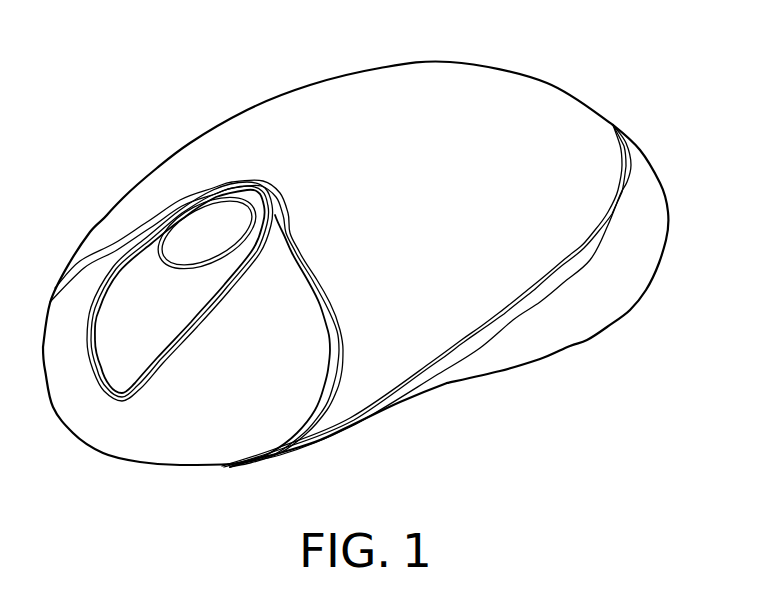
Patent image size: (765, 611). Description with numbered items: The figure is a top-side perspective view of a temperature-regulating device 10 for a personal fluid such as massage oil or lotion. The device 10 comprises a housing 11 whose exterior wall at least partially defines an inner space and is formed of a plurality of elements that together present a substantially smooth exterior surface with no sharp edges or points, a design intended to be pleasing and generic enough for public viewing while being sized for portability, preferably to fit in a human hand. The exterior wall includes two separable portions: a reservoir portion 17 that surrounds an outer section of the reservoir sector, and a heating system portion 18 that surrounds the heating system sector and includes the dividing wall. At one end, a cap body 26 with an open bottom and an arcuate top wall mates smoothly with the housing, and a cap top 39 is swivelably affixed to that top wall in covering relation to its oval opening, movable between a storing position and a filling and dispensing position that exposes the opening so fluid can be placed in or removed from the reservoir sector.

The temperature-regulating device 10 is at (372, 244).
The housing 11 is at (449, 384).
The reservoir portion 17 is at (395, 182).
The heating system portion 18 is at (610, 306).
The cap body 26 is at (227, 398).
The cap top 39 is at (167, 320).